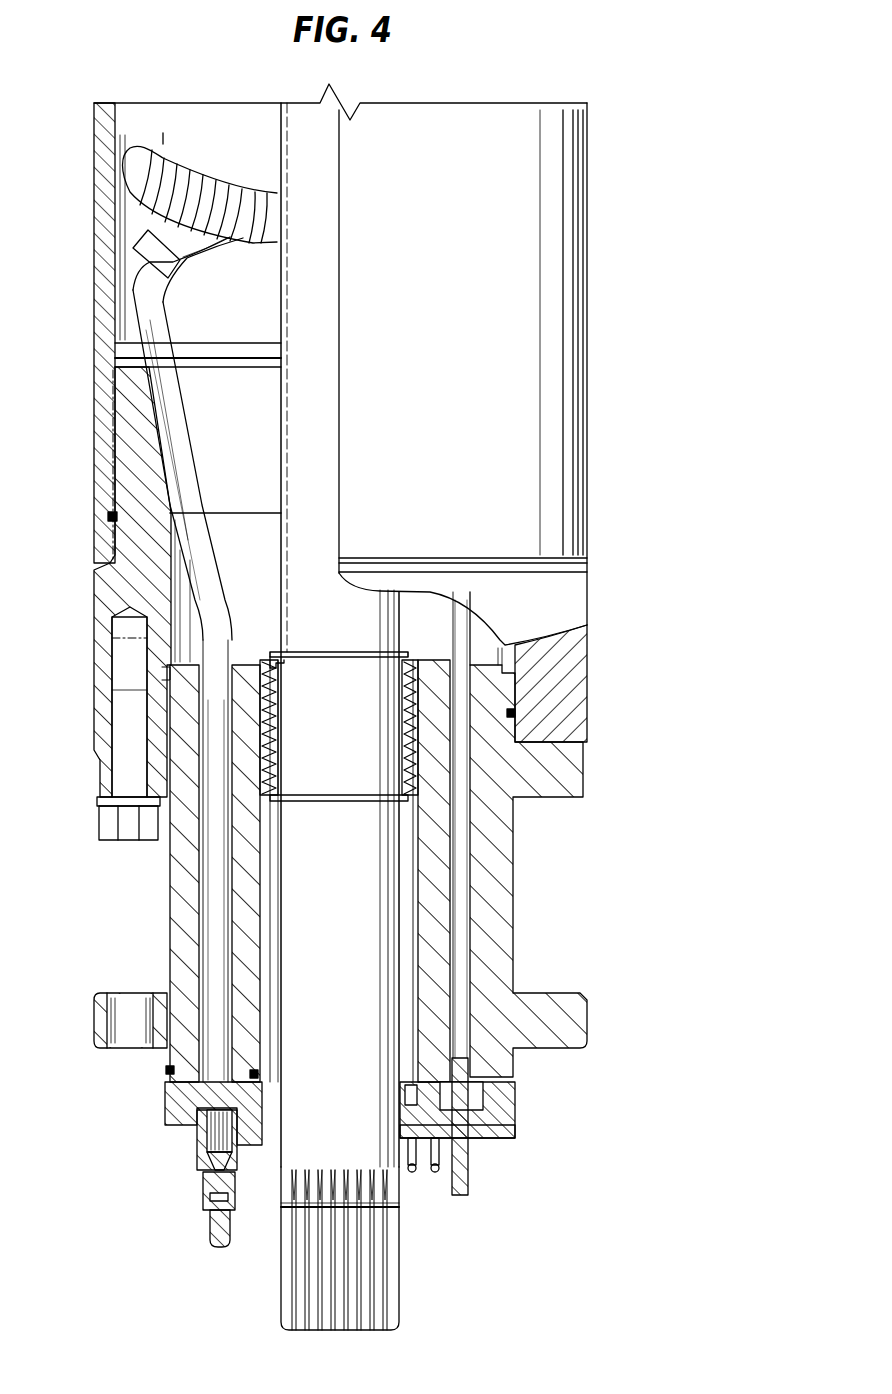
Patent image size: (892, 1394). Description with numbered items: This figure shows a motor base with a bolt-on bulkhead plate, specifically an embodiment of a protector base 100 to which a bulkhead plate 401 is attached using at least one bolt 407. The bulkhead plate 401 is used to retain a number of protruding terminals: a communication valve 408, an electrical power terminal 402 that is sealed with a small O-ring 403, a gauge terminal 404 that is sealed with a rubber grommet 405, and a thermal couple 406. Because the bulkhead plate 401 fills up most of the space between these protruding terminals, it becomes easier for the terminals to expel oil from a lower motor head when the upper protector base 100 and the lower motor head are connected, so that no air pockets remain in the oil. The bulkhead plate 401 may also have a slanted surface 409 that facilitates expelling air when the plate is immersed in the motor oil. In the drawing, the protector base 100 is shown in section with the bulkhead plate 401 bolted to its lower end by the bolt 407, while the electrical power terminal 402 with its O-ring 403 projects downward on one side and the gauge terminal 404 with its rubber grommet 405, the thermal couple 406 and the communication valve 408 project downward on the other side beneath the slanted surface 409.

The protector base 100 is at (615, 918).
The bulkhead plate 401 is at (183, 1133).
The electrical power terminal 402 is at (207, 1232).
The small O-ring 403 is at (170, 1112).
The gauge terminal 404 is at (468, 1172).
The rubber grommet 405 is at (475, 1098).
The thermal couple 406 is at (437, 1172).
The bolt 407 is at (207, 1197).
The communication valve 408 is at (413, 1172).
The slanted surface 409 is at (470, 1135).